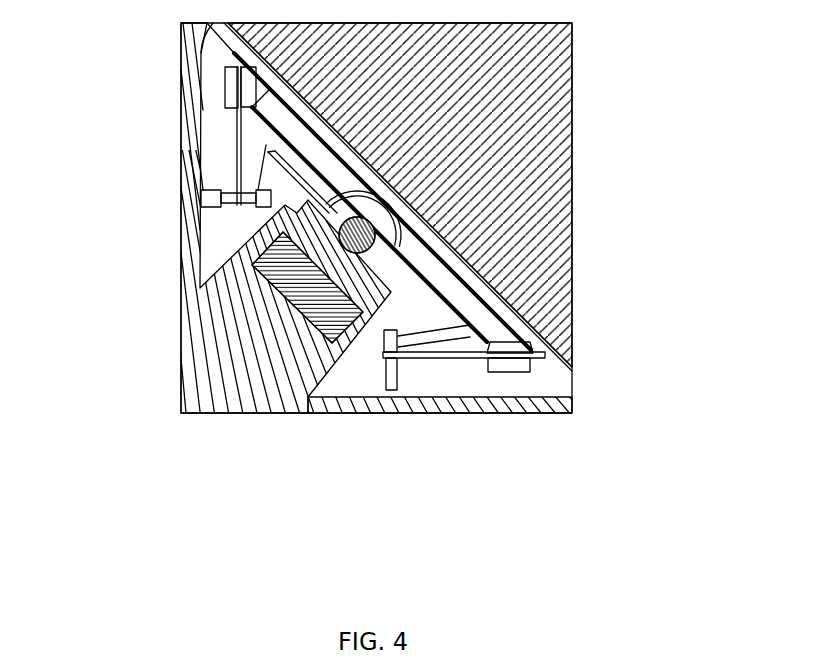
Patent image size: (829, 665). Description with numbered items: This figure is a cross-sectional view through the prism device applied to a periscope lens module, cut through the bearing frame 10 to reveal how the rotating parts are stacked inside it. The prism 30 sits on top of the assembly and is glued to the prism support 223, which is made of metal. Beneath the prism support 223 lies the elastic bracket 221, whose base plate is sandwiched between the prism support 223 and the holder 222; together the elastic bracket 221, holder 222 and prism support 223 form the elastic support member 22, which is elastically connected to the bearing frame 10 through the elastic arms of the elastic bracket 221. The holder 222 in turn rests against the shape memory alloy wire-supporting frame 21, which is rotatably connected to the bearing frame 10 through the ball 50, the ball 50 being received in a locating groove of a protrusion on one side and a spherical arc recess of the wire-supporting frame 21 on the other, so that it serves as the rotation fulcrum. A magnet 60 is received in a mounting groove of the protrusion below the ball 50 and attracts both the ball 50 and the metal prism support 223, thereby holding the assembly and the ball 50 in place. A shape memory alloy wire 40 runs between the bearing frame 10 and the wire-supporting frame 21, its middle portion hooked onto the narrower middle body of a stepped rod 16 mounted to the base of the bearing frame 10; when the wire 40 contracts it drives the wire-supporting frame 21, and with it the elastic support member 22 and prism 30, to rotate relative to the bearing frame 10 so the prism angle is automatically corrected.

The bearing frame 10 is at (344, 400).
The stepped rod 16 is at (213, 198).
The shape memory alloy wire-supporting frame 21 is at (467, 333).
The elastic support member 22 is at (499, 194).
The elastic bracket 221 is at (455, 258).
The holder 222 is at (500, 298).
The prism support 223 is at (418, 232).
The prism 30 is at (540, 90).
The shape memory alloy wire 40 is at (233, 142).
The ball 50 is at (405, 205).
The magnet 60 is at (283, 262).